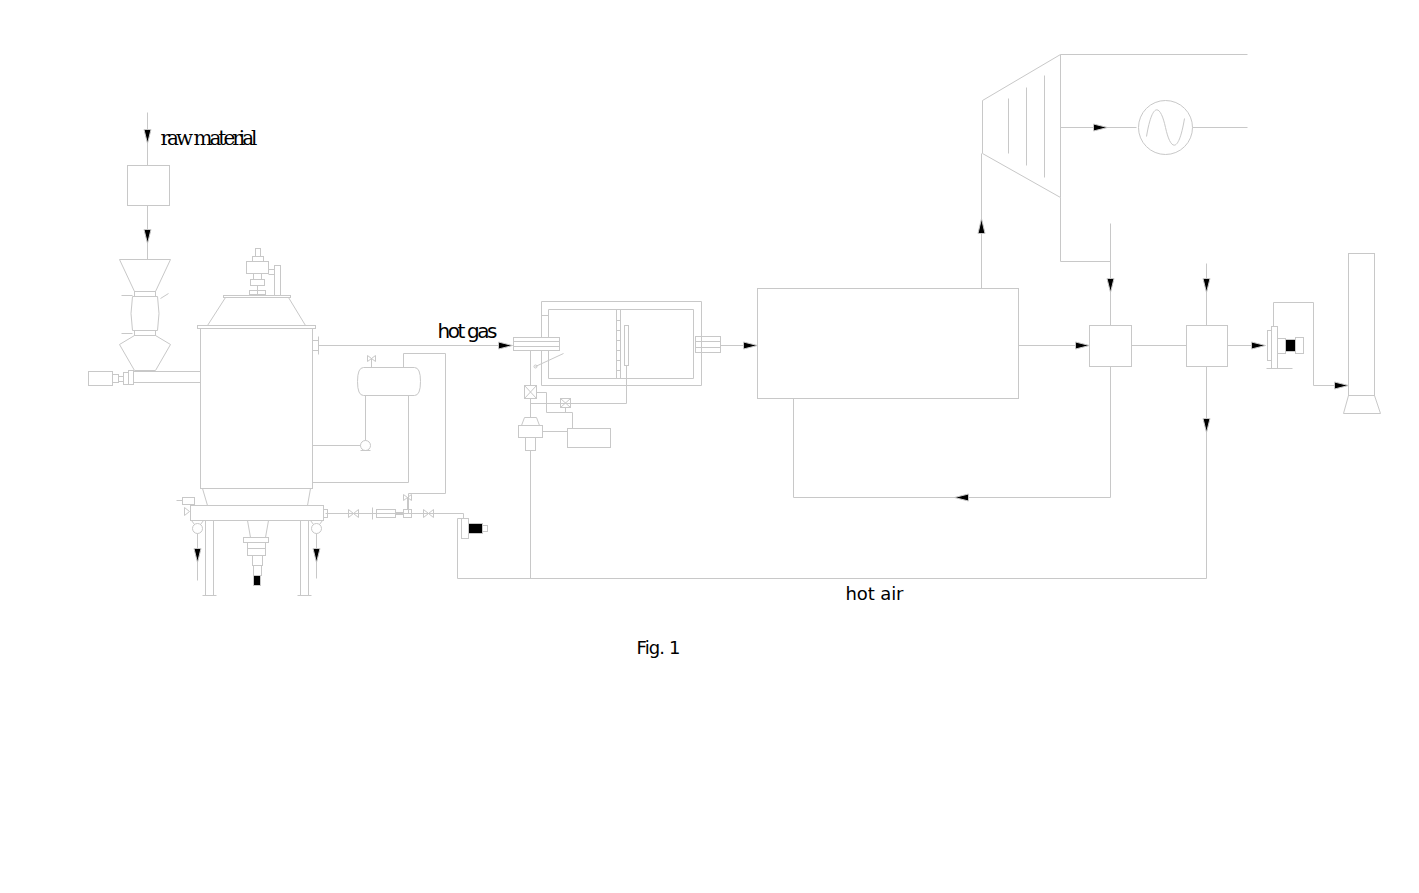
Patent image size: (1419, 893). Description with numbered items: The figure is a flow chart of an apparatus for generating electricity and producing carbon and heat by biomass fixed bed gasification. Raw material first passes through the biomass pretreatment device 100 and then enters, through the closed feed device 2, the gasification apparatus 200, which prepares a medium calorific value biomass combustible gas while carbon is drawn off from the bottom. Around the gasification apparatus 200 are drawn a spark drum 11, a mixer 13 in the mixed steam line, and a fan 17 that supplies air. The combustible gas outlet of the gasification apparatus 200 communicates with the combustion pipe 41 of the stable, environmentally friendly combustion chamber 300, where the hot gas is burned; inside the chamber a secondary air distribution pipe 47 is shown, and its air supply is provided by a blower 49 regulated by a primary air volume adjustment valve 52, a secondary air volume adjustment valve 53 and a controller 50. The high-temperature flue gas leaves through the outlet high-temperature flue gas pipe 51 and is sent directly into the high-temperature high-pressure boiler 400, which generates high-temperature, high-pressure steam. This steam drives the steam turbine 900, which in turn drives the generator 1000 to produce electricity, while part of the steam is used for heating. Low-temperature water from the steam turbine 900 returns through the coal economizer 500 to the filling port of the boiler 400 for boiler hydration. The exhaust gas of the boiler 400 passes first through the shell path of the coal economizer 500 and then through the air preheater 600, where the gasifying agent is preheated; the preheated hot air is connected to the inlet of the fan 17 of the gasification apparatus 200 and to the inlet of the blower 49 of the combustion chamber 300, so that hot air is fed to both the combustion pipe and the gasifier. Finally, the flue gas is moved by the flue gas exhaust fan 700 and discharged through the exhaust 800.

The biomass pretreatment device 100 is at (155, 189).
The closed feed device 2 is at (147, 275).
The gasification apparatus 200 is at (275, 357).
The spark drum 11 is at (379, 383).
The mixer 13 is at (378, 517).
The fan 17 is at (477, 523).
The combustion pipe 41 is at (533, 343).
The combustion chamber 300 is at (582, 325).
The secondary air distribution pipe 47 is at (630, 340).
The outlet high-temperature flue gas pipe 51 is at (713, 340).
The primary air volume adjustment valve 52 is at (523, 388).
The secondary air volume adjustment valve 53 is at (570, 405).
The blower 49 is at (523, 433).
The controller 50 is at (602, 438).
The high-temperature high-pressure boiler 400 is at (866, 318).
The coal economizer 500 is at (1103, 357).
The air preheater 600 is at (1217, 353).
The flue gas exhaust fan 700 is at (1278, 367).
The exhaust 800 is at (1360, 283).
The steam turbine 900 is at (997, 129).
The generator 1000 is at (1166, 143).